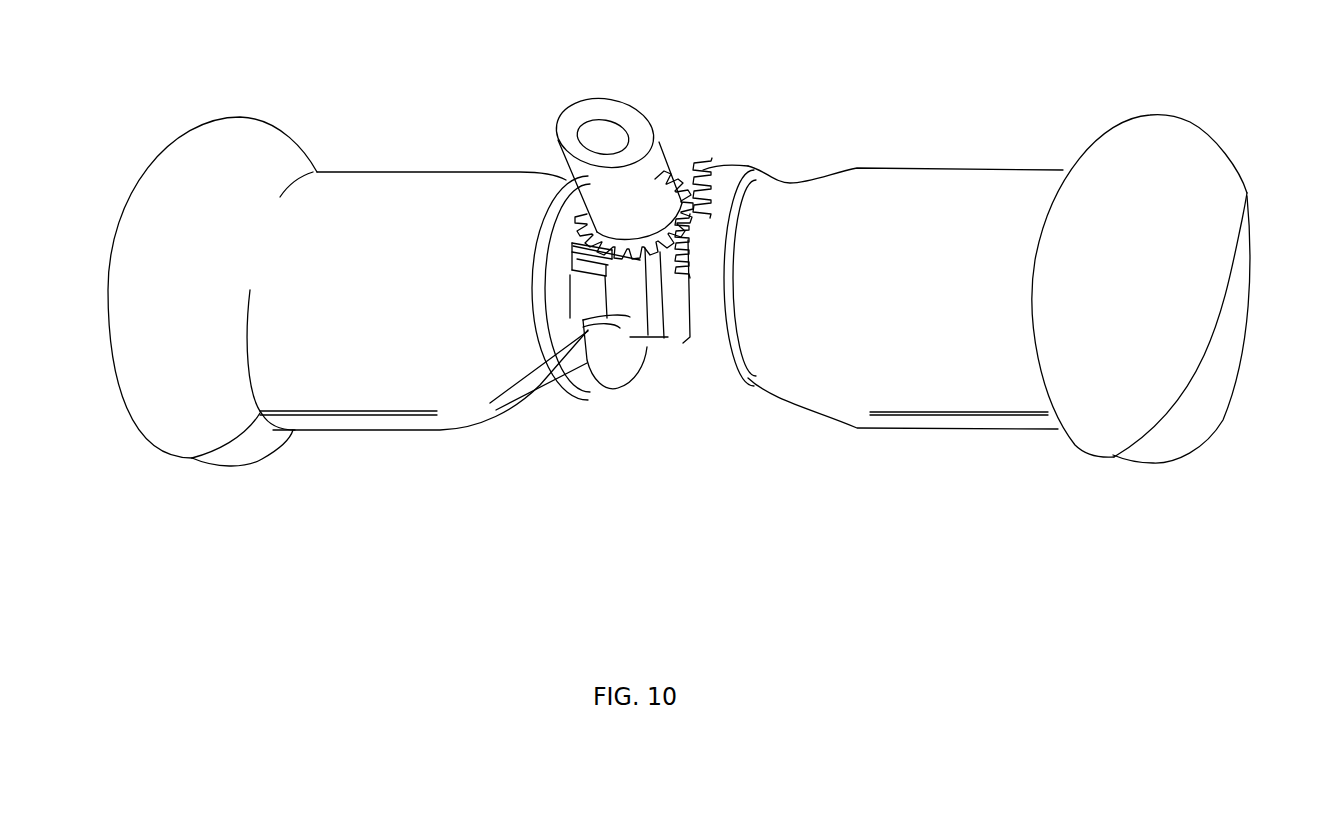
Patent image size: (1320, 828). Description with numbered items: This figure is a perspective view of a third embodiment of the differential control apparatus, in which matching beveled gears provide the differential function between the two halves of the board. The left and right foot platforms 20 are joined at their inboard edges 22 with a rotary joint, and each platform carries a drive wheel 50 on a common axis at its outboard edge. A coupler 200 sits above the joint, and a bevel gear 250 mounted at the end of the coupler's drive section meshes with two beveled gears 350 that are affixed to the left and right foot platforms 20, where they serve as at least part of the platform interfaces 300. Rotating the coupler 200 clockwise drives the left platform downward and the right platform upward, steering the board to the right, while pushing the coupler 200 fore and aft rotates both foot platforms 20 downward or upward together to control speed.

The foot platform 20 is at (410, 420).
The inboard edge 22 is at (667, 327).
The drive wheel 50 is at (1153, 463).
The coupler 200 is at (557, 127).
The bevel gear 250 is at (697, 170).
The platform interface 300 is at (587, 363).
The beveled gear 350 is at (700, 170).